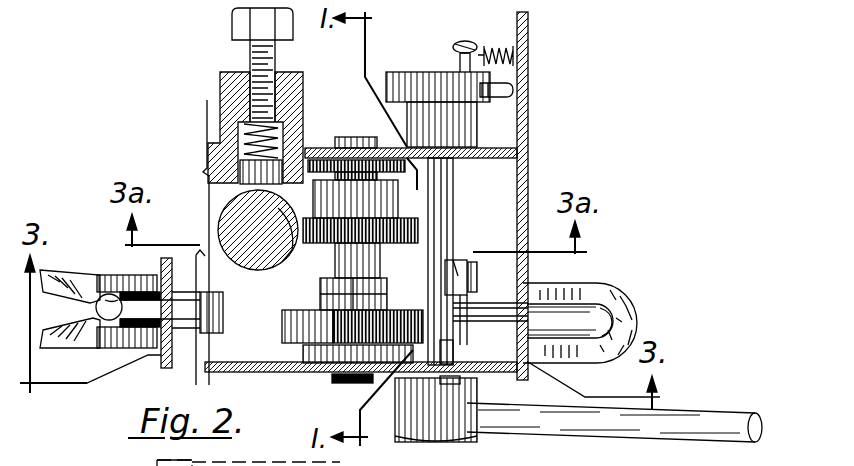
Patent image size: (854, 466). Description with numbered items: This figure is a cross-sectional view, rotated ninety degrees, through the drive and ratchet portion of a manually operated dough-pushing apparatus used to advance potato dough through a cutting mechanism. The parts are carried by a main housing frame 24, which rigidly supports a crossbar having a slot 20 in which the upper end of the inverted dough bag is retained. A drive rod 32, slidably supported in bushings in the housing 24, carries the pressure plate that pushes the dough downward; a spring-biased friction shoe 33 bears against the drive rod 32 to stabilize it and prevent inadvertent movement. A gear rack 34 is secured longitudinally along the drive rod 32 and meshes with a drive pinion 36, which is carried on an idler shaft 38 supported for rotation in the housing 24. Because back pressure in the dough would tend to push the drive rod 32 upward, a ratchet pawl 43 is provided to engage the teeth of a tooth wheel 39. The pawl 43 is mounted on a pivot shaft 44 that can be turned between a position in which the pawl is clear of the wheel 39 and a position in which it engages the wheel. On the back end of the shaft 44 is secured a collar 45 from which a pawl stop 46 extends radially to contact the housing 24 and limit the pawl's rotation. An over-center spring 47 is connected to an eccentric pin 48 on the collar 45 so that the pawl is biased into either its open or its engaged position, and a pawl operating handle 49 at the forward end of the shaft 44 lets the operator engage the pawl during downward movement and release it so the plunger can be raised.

The slot 20 is at (130, 296).
The main housing frame 24 is at (521, 148).
The drive rod 32 is at (246, 264).
The friction shoe 33 is at (240, 187).
The gear rack 34 is at (279, 263).
The drive pinion 36 is at (328, 244).
The idler shaft 38 is at (377, 272).
The tooth wheel 39 is at (283, 325).
The ratchet pawl 43 is at (493, 281).
The pivot shaft 44 is at (450, 178).
The collar 45 is at (432, 81).
The pawl stop 46 is at (502, 96).
The over-center spring 47 is at (490, 47).
The eccentric pin 48 is at (462, 45).
The pawl operating handle 49 is at (692, 422).